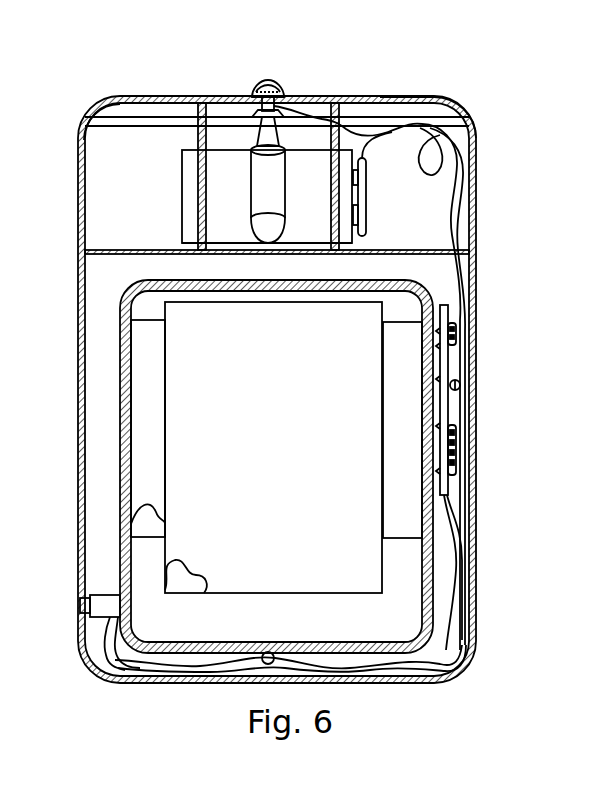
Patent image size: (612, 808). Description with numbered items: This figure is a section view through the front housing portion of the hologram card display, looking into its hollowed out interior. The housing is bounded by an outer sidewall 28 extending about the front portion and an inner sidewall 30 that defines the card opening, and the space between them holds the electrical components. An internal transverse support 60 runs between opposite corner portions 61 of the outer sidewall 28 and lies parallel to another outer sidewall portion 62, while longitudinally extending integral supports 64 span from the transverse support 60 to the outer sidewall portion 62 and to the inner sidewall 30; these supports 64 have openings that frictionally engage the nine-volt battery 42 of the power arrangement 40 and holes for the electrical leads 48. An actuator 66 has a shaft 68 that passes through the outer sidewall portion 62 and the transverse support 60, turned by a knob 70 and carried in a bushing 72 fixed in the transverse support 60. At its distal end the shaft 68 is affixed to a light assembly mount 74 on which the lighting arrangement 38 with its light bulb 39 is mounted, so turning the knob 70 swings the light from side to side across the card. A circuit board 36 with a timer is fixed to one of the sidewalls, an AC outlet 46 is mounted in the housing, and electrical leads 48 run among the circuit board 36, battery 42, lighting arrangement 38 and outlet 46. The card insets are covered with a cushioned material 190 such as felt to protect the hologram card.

The outer sidewall 28 is at (78, 468).
The inner sidewall 30 is at (115, 291).
The circuit board 36 is at (445, 400).
The lighting arrangement 38 is at (232, 228).
The light bulb 39 is at (263, 229).
The power arrangement 40 is at (182, 218).
The 9-volt battery 42 is at (346, 226).
The AC outlet 46 is at (79, 606).
The electrical leads 48 is at (437, 143).
The transverse support 60 is at (146, 116).
The corner portions 61 is at (98, 101).
The outer sidewall portion 62 is at (378, 93).
The longitudinally extending integral supports 64 is at (193, 107).
The actuator 66 is at (284, 82).
The shaft 68 is at (300, 106).
The knob 70 is at (268, 79).
The bushing 72 is at (254, 113).
The light assembly mount 74 is at (277, 197).
The cushioned material 190 is at (146, 525).